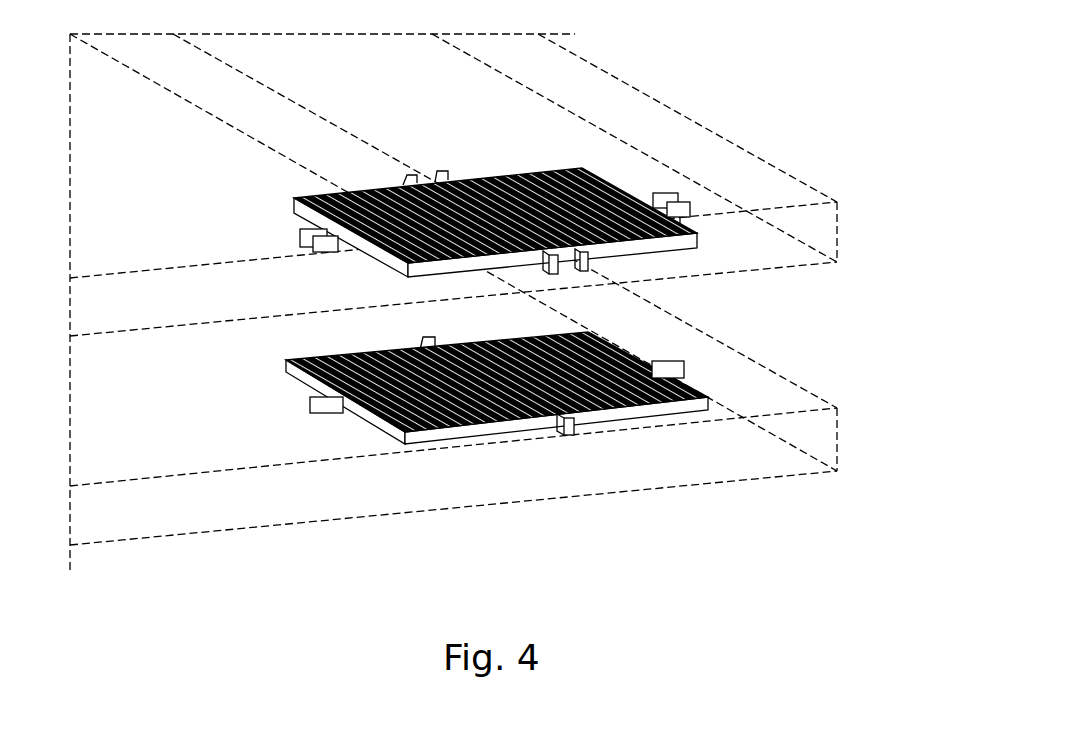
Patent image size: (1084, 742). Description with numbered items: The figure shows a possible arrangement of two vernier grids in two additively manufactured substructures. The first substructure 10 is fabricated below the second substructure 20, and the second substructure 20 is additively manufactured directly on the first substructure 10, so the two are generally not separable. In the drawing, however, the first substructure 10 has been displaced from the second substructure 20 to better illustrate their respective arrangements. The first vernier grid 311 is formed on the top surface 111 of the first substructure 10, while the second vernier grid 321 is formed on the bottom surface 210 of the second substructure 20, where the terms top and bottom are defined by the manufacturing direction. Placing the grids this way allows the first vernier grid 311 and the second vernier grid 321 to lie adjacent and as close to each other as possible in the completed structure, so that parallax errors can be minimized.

The first substructure 10 is at (480, 483).
The top surface of first plate 111 is at (794, 401).
The second substructure 20 is at (760, 177).
The bottom surface of the second substructure 210 is at (800, 271).
The first vernier grid 311 is at (632, 353).
The second vernier grid 321 is at (612, 185).